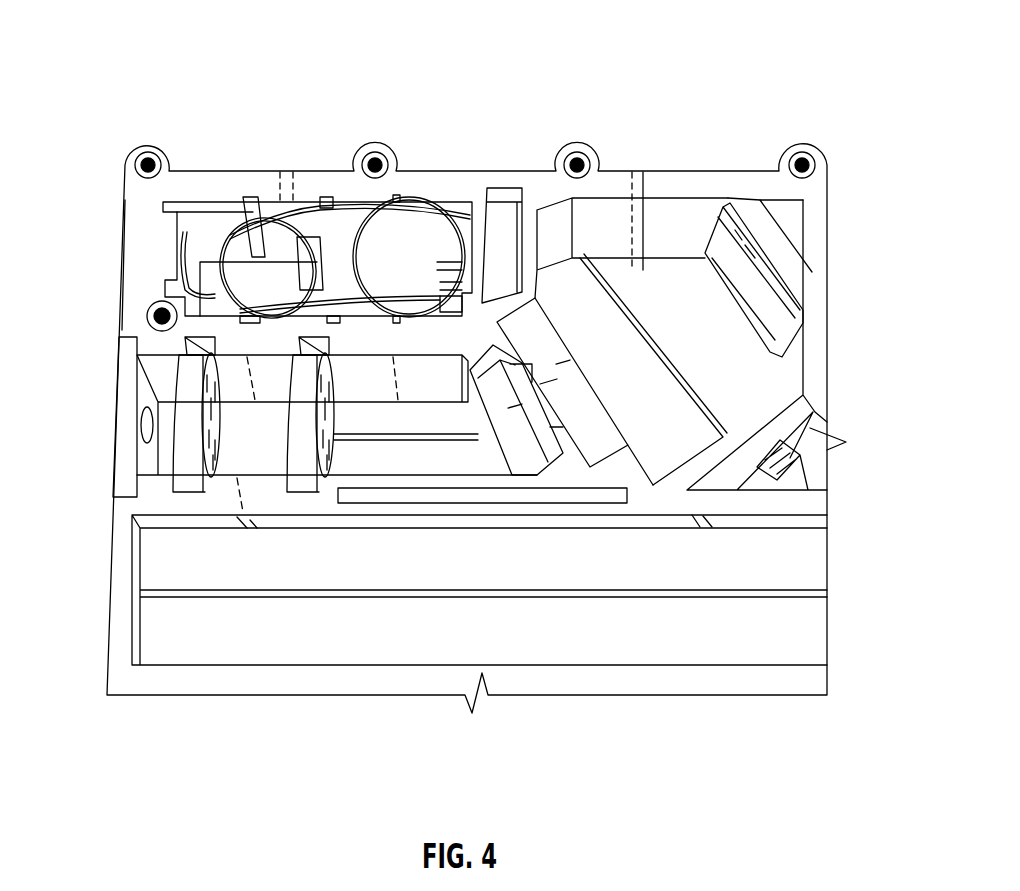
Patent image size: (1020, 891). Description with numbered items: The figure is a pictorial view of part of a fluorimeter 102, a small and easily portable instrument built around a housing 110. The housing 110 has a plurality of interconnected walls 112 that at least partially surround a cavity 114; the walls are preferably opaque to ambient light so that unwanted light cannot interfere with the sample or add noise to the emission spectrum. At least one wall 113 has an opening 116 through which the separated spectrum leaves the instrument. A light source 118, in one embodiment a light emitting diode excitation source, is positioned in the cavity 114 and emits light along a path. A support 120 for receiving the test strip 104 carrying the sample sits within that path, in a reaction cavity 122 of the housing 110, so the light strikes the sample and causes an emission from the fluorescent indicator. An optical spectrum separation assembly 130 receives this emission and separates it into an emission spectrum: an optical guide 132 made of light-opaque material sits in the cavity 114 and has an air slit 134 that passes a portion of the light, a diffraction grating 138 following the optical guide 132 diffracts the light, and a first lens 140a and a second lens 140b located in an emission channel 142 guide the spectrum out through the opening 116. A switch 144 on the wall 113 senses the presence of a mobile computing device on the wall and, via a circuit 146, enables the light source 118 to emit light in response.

The fluorimeter 102 is at (181, 32).
The test strip 104 is at (760, 305).
The housing 110 is at (765, 694).
The interconnected walls 112 is at (218, 337).
The wall 113 is at (109, 618).
The cavity 114 is at (263, 287).
The opening 116 is at (145, 430).
The light source 118 is at (510, 220).
The support 120 is at (757, 223).
The reaction cavity 122 is at (630, 273).
The optical spectrum separation assembly 130 is at (99, 505).
The optical guide 132 is at (538, 357).
The air slit 134 is at (613, 415).
The diffraction grating 138 is at (531, 453).
The first lens 140a is at (305, 492).
The second lens 140b is at (197, 492).
The emission channel 142 is at (422, 452).
The switch 144 is at (122, 246).
The circuit 146 is at (302, 247).